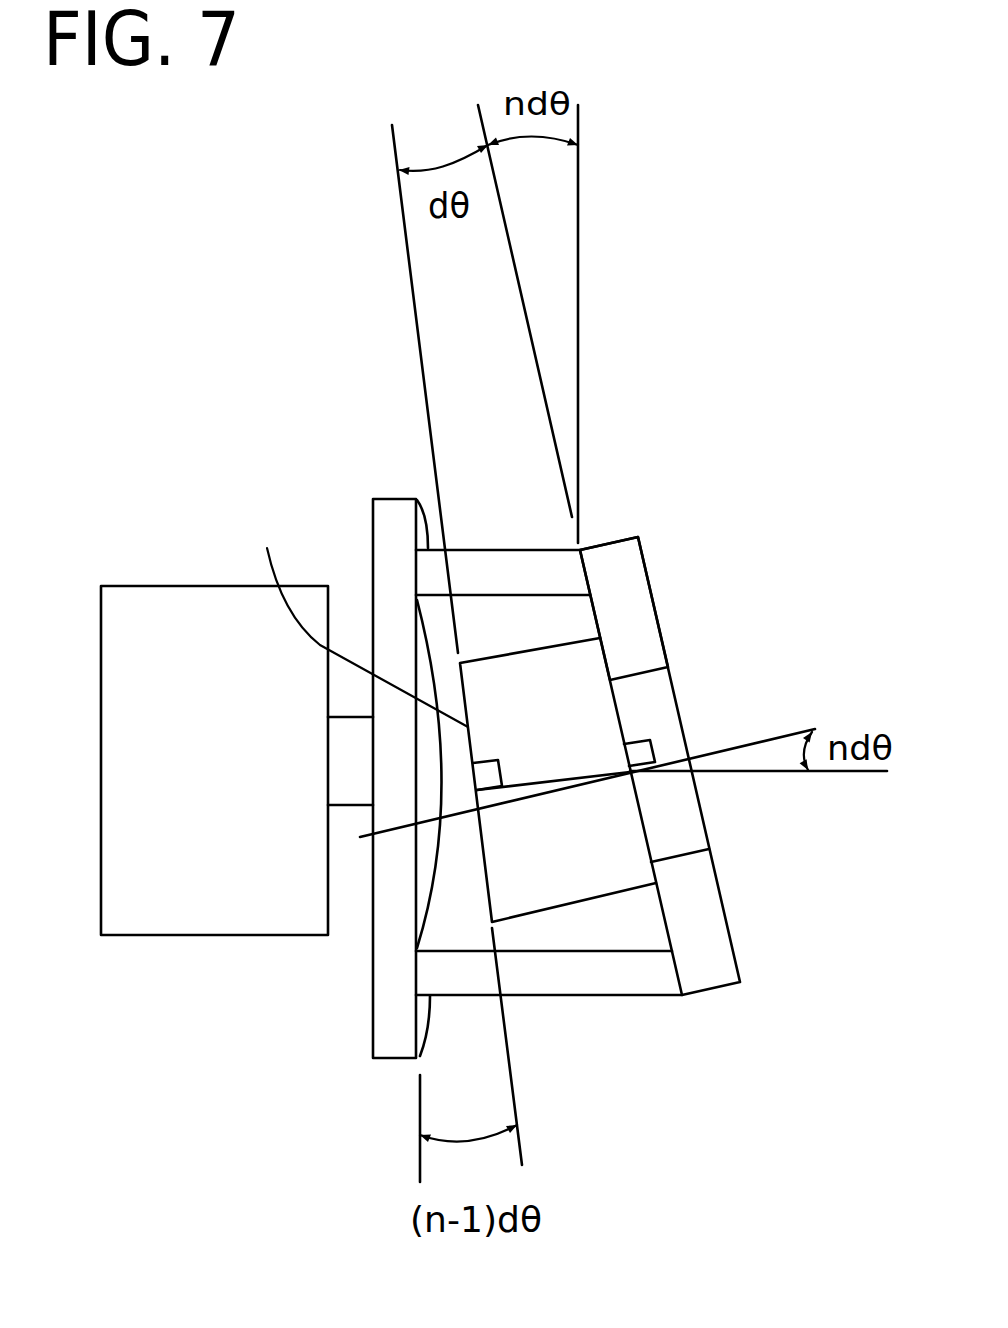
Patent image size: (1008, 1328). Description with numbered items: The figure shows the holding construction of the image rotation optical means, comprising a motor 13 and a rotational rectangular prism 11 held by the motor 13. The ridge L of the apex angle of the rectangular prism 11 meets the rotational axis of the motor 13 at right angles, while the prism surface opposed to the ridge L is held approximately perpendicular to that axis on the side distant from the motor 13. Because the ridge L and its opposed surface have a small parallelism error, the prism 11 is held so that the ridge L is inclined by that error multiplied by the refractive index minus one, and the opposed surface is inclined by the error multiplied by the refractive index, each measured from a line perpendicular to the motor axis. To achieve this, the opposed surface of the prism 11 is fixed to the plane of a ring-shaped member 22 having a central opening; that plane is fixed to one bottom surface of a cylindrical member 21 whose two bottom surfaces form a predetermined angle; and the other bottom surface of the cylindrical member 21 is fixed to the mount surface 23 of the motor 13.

The rotational rectangular prism 11 is at (633, 815).
The motor 13 is at (132, 633).
The cylindrical member 21 is at (597, 983).
The ring-shaped member 22 is at (638, 588).
The mount surface 23 is at (423, 668).
The ridge L is at (361, 617).